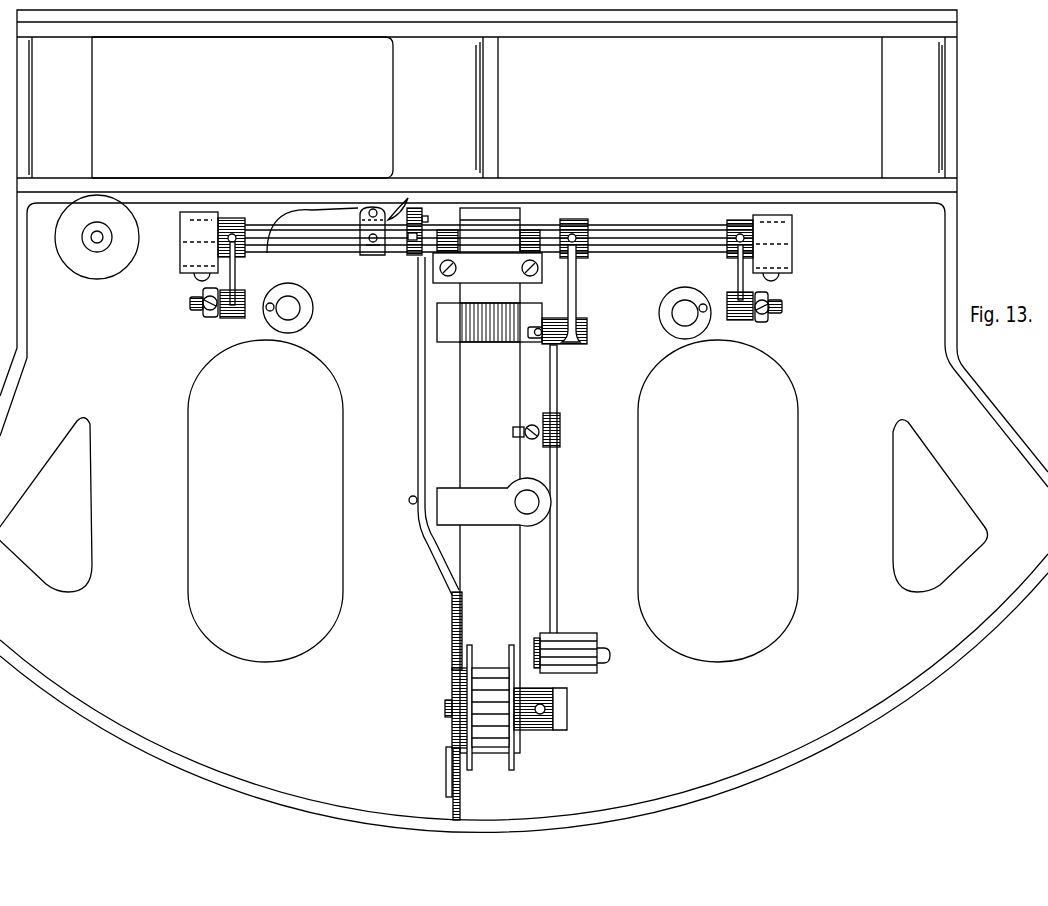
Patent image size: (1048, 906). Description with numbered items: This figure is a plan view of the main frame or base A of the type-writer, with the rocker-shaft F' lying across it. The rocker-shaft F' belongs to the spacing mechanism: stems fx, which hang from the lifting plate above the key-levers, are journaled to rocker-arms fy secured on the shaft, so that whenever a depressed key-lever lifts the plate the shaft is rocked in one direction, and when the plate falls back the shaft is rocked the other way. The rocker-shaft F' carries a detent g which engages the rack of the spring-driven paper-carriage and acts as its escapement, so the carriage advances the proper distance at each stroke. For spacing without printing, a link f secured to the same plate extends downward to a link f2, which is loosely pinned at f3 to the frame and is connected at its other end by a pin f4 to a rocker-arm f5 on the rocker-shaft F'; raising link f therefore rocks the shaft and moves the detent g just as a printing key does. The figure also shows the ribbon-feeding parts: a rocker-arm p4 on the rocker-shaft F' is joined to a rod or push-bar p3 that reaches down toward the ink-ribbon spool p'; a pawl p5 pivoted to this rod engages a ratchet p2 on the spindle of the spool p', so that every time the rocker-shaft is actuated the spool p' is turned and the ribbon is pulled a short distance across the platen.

The main frame or base A is at (524, 421).
The rocker-shaft F' is at (499, 252).
The rocker-arms fy is at (237, 271).
The stems fx is at (805, 287).
The detent g is at (393, 210).
The rocker-arm p4 is at (408, 255).
The rocker-arm f5 is at (576, 293).
The pin f4 is at (537, 342).
The link f2 is at (553, 553).
The link or bar f is at (520, 423).
The pivot pin f3 is at (608, 657).
The rod p3 is at (433, 553).
The pawl p5 is at (463, 609).
The ratchet p2 is at (462, 688).
The ink-ribbon spool p' is at (517, 709).